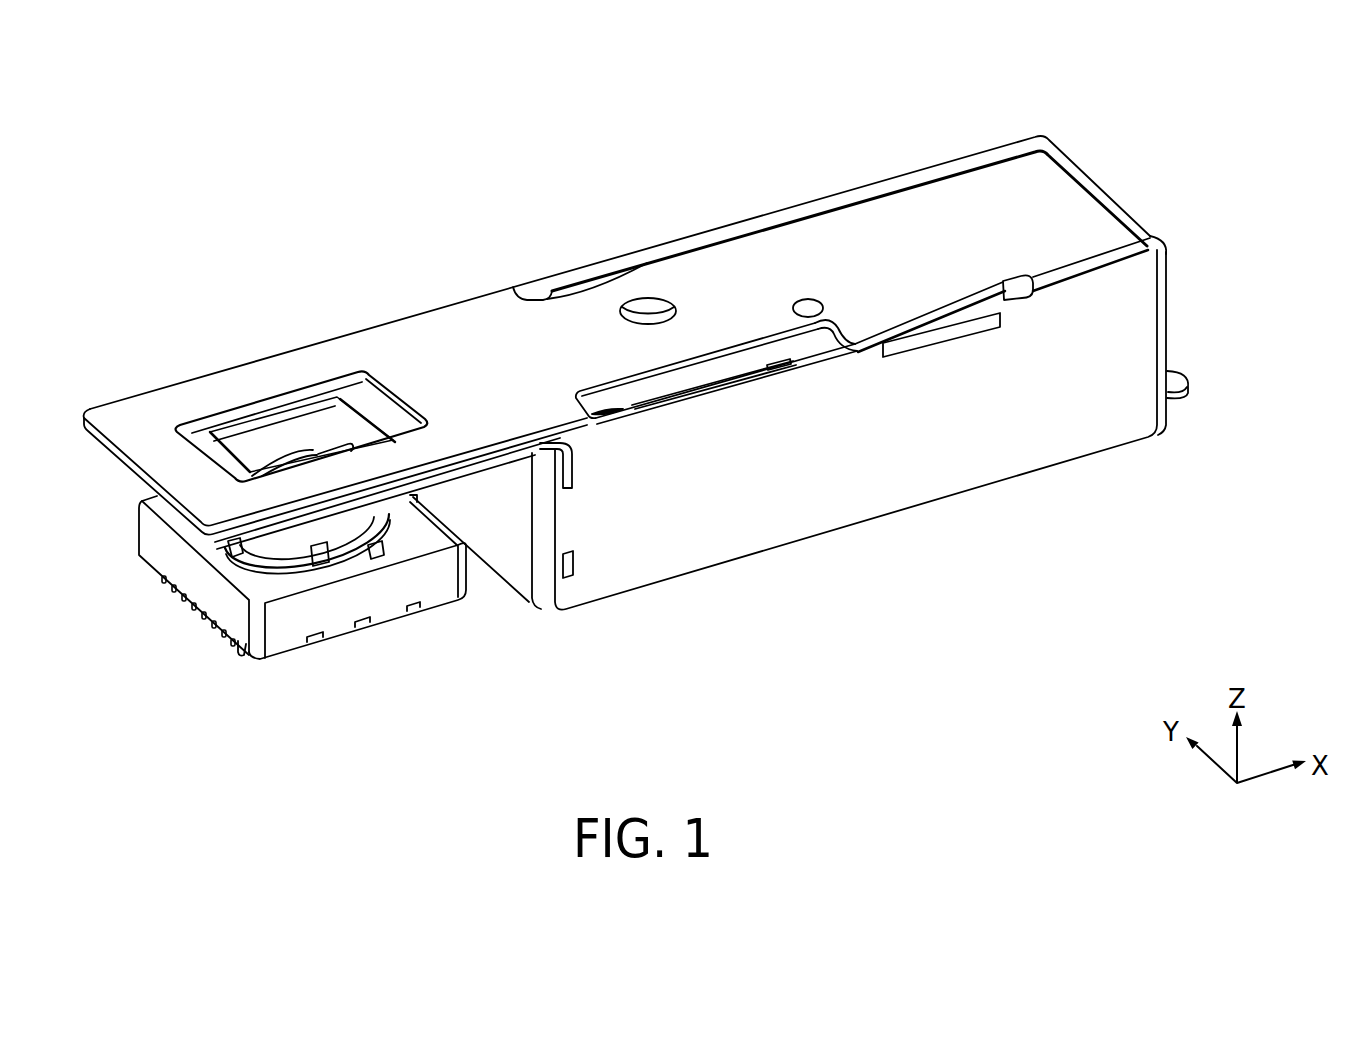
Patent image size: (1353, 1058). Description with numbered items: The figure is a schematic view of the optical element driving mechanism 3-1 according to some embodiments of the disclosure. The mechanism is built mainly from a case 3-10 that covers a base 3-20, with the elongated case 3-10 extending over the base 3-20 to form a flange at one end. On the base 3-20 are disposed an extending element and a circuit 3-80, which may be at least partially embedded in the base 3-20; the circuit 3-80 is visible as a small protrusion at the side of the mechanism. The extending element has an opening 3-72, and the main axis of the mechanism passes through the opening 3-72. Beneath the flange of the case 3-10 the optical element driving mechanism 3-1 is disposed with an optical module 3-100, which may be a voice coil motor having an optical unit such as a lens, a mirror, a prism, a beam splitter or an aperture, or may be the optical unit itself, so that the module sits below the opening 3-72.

The optical element driving mechanism 3-1 is at (1054, 130).
The case 3-10 is at (1087, 203).
The base 3-20 is at (870, 495).
The opening 3-72 is at (257, 432).
The circuit 3-80 is at (1180, 375).
The optical module 3-100 is at (154, 556).